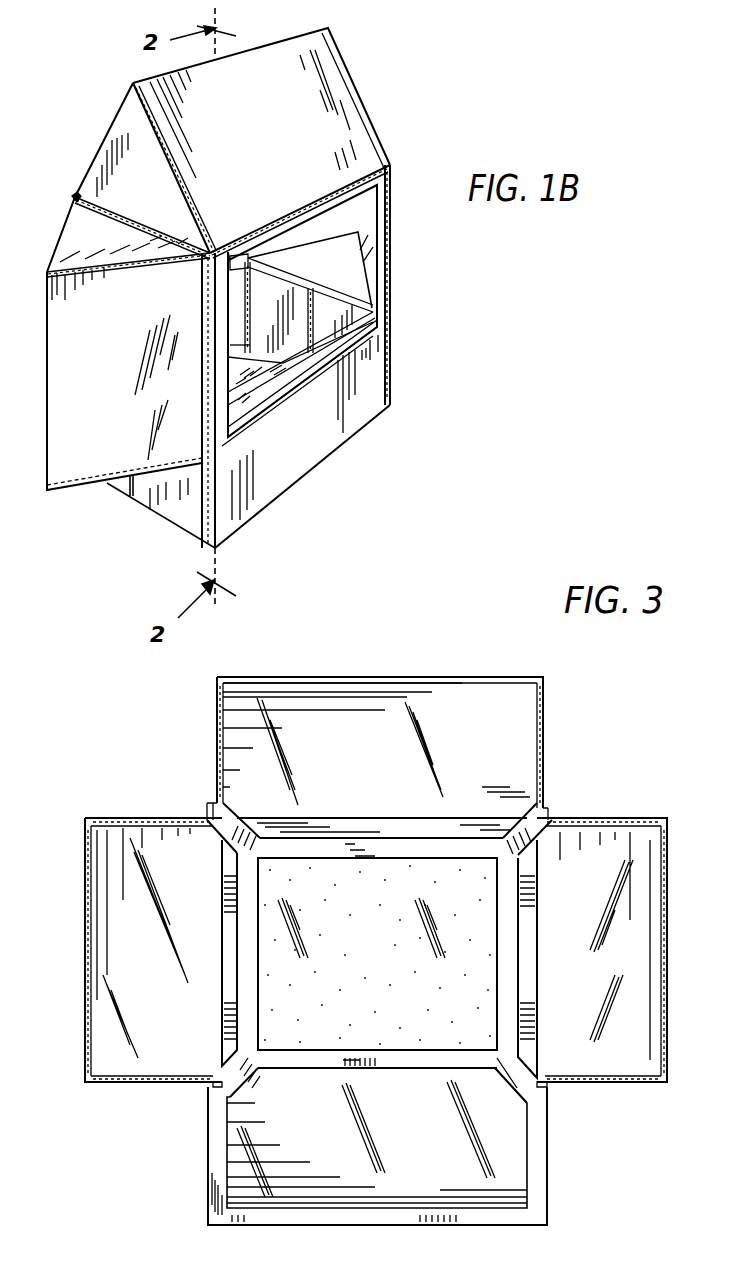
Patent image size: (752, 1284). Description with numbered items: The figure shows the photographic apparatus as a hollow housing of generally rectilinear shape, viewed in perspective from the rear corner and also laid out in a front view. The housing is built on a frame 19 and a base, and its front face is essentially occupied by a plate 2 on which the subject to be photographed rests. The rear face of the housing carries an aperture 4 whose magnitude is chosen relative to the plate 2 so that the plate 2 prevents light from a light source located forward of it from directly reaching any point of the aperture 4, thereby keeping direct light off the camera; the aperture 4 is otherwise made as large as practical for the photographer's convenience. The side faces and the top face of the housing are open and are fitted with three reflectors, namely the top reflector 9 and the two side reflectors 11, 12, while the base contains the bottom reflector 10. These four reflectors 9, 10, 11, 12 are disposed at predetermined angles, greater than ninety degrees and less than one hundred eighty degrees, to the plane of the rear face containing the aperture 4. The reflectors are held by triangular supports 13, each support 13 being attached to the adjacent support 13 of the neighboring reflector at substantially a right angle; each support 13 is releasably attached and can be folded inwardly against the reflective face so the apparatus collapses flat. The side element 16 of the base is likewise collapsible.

In FIG. 3, the plate 2 is at (370, 970).
In FIG. 1B, the aperture 4 is at (258, 413).
In FIG. 1B, the reflector 9 is at (323, 84).
In FIG. 3, the reflector 9 is at (380, 703).
In FIG. 1B, the bottom reflector 10 is at (313, 363).
In FIG. 3, the bottom reflector 10 is at (505, 1168).
In FIG. 3, the side reflector 11 is at (147, 1065).
In FIG. 1B, the side reflector 12 is at (84, 473).
In FIG. 3, the side reflector 12 is at (657, 873).
In FIG. 1B, the triangular support 13 is at (78, 233).
In FIG. 1B, the side element 16 is at (343, 319).
In FIG. 3, the frame 19 is at (515, 1073).